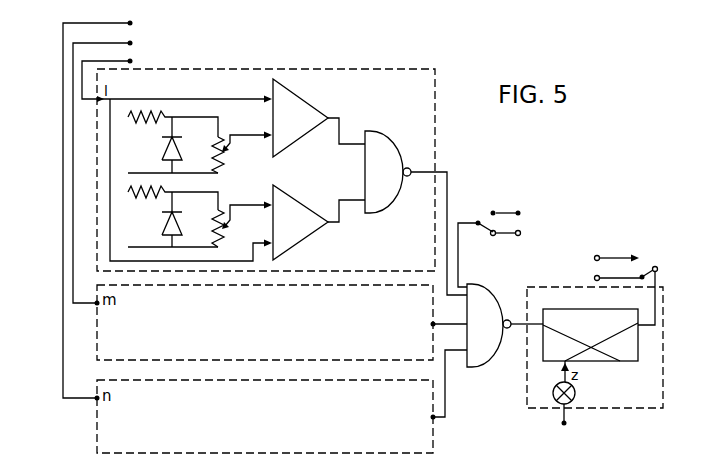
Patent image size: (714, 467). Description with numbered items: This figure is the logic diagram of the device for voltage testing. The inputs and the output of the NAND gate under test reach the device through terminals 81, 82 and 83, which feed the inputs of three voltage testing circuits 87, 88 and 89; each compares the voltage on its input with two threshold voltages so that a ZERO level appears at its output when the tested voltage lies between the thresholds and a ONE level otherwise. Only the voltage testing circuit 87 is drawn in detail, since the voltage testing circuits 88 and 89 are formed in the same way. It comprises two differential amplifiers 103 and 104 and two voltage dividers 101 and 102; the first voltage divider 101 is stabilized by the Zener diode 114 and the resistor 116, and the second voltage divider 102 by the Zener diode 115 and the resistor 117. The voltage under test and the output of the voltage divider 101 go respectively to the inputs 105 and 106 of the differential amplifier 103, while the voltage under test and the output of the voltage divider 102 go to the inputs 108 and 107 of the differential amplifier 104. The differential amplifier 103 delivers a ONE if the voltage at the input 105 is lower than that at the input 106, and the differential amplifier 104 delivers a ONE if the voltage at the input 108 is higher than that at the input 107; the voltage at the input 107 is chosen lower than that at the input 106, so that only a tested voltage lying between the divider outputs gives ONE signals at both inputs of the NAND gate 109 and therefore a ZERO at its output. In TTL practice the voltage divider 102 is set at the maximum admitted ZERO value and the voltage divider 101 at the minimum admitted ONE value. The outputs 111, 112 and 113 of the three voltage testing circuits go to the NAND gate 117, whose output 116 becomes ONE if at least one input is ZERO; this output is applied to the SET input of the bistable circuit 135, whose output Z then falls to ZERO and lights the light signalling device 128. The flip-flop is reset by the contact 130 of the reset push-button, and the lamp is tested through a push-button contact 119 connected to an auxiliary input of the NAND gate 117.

The terminal 81 is at (109, 208).
The terminal 82 is at (114, 170).
The terminal 83 is at (118, 77).
The voltage testing circuit 87 is at (363, 69).
The voltage testing circuit 88 is at (392, 360).
The voltage testing circuit 89 is at (434, 427).
The voltage divider 101 is at (233, 159).
The voltage divider 102 is at (233, 232).
The differential amplifier 103 is at (318, 103).
The differential amplifier 104 is at (311, 250).
The input 105 is at (268, 99).
The input 106 is at (265, 139).
The input 107 is at (266, 204).
The input 108 is at (263, 241).
The NAND gate 109 is at (388, 143).
The output 111 is at (463, 166).
The output 112 is at (433, 322).
The output 113 is at (446, 386).
The Zener diode 114 is at (165, 146).
The Zener diode 115 is at (165, 221).
The resistor 116 is at (157, 110).
The NAND gate 117 is at (157, 185).
The contact 119 is at (487, 229).
The light signalling device 128 is at (575, 394).
The contact 130 is at (623, 267).
The bistable circuit 135 is at (551, 309).